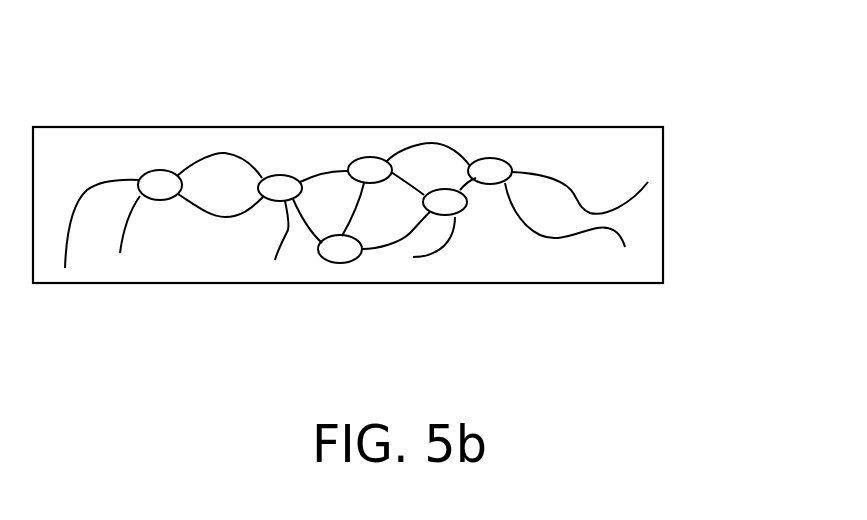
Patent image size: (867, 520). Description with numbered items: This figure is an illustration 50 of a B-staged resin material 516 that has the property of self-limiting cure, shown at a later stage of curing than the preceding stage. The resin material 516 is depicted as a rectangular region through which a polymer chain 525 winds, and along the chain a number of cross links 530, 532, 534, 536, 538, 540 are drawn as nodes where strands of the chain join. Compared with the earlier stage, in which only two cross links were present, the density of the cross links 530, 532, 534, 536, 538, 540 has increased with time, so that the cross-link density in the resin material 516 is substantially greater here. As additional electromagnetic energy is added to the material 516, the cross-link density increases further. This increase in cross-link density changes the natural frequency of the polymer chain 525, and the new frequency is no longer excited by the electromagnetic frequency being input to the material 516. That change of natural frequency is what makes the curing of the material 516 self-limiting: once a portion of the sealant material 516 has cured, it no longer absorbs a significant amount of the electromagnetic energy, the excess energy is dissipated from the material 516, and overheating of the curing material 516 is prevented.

The illustration 50 is at (705, 73).
The resin material 516 is at (638, 212).
The polymer chain 525 is at (432, 143).
The cross link 530 is at (495, 170).
The cross link 532 is at (285, 183).
The cross link 534 is at (340, 250).
The cross link 536 is at (453, 200).
The cross link 538 is at (370, 167).
The cross link 540 is at (158, 182).